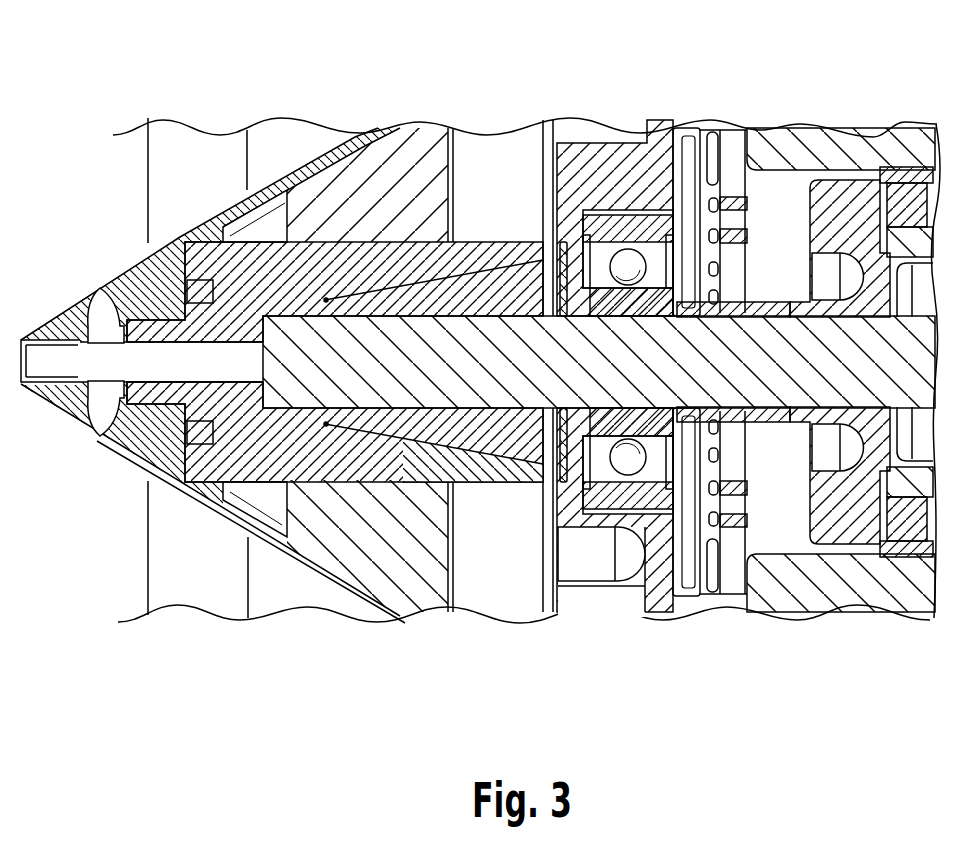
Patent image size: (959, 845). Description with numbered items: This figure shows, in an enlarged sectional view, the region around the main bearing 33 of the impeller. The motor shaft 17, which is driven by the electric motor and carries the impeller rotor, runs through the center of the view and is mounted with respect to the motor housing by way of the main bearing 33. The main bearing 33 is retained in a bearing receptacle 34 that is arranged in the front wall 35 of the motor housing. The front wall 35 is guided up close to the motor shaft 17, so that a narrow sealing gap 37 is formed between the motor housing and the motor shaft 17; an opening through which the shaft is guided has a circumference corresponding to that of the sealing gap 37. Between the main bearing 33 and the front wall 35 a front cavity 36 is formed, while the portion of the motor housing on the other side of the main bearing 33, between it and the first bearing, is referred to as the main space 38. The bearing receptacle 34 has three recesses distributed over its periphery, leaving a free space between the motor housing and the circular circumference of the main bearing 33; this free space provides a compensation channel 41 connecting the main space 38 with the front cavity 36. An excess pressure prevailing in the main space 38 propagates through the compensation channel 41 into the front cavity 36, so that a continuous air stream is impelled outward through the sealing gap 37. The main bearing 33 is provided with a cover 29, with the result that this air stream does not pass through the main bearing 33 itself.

The motor shaft 17 is at (407, 340).
The cover 29 is at (495, 407).
The main bearing 33 is at (640, 215).
The bearing receptacle 34 is at (641, 523).
The front wall 35 is at (571, 283).
The front cavity 36 is at (551, 313).
The sealing gap 37 is at (483, 410).
The main space 38 is at (773, 220).
The compensation channel 41 is at (671, 207).